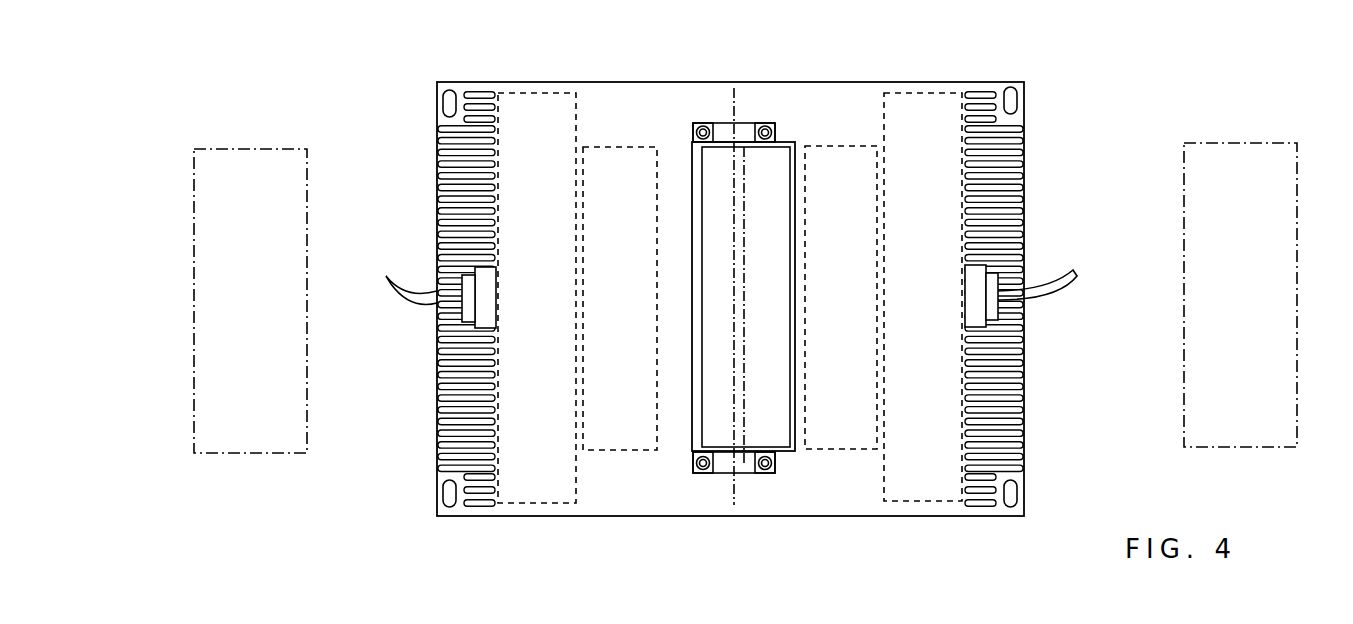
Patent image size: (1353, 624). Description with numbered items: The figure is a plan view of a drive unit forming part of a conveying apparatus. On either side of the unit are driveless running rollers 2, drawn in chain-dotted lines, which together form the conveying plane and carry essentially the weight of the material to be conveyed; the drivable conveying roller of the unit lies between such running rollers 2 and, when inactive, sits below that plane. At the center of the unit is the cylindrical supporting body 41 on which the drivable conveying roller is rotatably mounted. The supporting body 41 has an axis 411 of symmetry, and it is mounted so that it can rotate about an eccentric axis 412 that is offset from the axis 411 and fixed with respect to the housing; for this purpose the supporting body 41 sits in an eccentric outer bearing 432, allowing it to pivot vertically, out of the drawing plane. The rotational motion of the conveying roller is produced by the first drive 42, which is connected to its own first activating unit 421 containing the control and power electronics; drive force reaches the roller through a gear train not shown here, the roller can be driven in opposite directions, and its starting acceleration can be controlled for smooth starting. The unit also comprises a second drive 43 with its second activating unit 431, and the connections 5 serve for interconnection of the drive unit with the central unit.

The driveless running roller 2 is at (271, 163).
The connections 5 is at (1079, 268).
The cylindrical supporting body 41 is at (783, 145).
The axis of symmetry 411 is at (744, 140).
The eccentric axis 412 is at (735, 497).
The first drive 42 is at (835, 157).
The first activating unit 421 is at (917, 110).
The second drive 43 is at (637, 157).
The second activating unit 431 is at (547, 105).
The eccentric outer bearing 432 is at (770, 474).